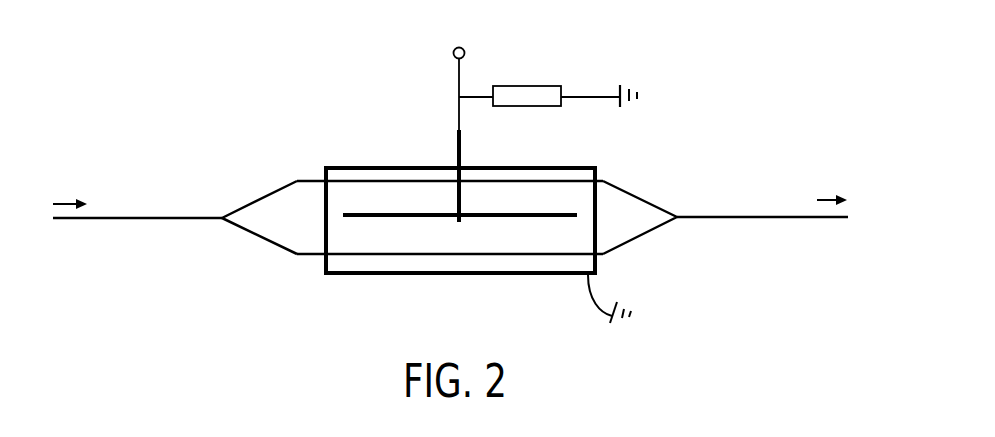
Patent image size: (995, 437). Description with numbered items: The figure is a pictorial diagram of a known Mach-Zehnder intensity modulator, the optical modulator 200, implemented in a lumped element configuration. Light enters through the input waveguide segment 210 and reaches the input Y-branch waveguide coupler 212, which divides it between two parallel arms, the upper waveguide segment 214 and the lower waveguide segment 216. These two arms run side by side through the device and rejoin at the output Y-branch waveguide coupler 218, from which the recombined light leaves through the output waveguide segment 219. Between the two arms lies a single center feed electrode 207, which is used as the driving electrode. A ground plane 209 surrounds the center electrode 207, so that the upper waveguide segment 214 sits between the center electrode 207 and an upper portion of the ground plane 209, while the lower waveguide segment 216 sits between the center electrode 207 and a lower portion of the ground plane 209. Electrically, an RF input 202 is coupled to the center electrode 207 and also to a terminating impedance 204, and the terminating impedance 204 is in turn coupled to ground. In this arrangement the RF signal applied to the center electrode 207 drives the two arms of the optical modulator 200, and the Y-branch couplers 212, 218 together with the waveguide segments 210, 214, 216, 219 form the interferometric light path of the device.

The optical modulator 200 is at (683, 115).
The RF input 202 is at (453, 53).
The terminating impedance 204 is at (522, 85).
The center feed electrode 207 is at (553, 213).
The ground plane 209 is at (397, 275).
The input waveguide segment 210 is at (133, 223).
The input Y-branch waveguide coupler 212 is at (222, 227).
The upper waveguide segment 214 is at (308, 178).
The lower waveguide segment 216 is at (304, 263).
The output Y-branch waveguide coupler 218 is at (675, 218).
The output waveguide segment 219 is at (722, 212).